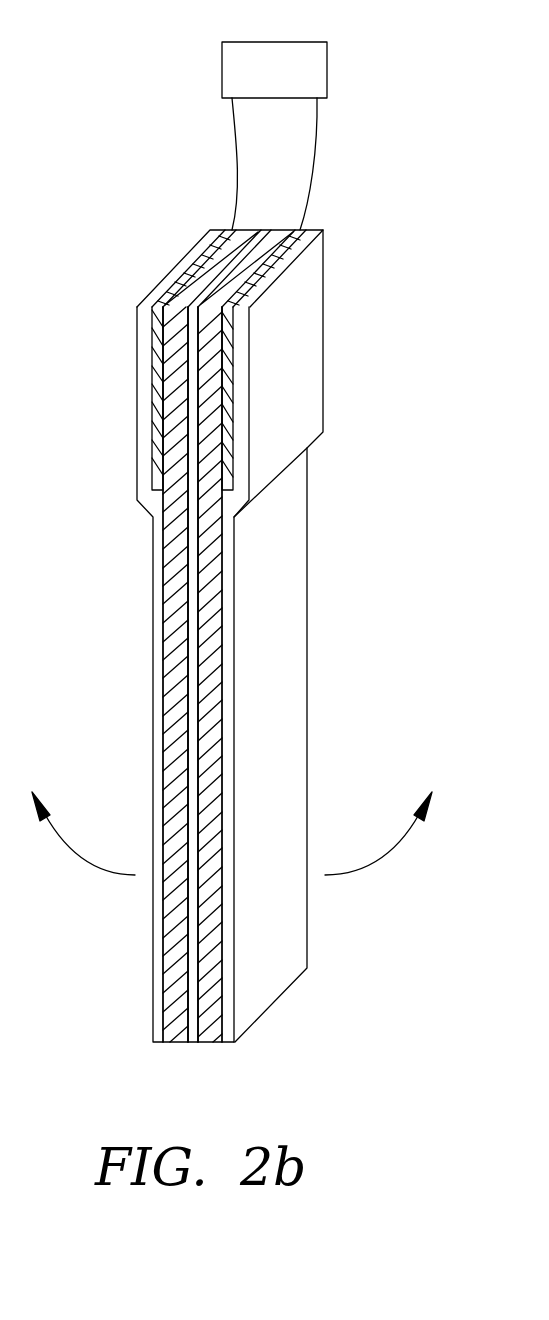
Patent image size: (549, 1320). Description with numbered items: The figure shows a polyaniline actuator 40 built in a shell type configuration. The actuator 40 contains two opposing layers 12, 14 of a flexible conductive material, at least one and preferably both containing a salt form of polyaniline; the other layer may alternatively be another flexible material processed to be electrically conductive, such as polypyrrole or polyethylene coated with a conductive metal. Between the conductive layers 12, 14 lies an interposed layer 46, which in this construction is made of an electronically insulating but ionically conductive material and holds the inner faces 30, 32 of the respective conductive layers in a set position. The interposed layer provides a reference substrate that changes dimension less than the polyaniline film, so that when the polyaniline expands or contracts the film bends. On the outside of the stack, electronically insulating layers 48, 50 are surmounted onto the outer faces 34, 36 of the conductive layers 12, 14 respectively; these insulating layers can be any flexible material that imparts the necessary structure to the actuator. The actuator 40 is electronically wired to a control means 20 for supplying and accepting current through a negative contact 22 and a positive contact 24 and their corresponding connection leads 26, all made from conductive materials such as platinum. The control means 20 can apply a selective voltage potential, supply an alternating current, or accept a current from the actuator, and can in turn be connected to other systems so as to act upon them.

The conductive layer 12 is at (208, 1037).
The conductive layer 14 is at (177, 1037).
The control means 20 is at (280, 42).
The negative contact 22 is at (207, 253).
The positive contact 24 is at (291, 243).
The connection leads 26 is at (309, 175).
The inner face 30 is at (165, 620).
The inner face 32 is at (223, 598).
The outer face 34 is at (223, 578).
The outer face 36 is at (163, 578).
The actuator 40 is at (405, 382).
The interposed layer 46 is at (193, 628).
The electronically insulating layer 48 is at (227, 657).
The electronically insulating layer 50 is at (158, 707).